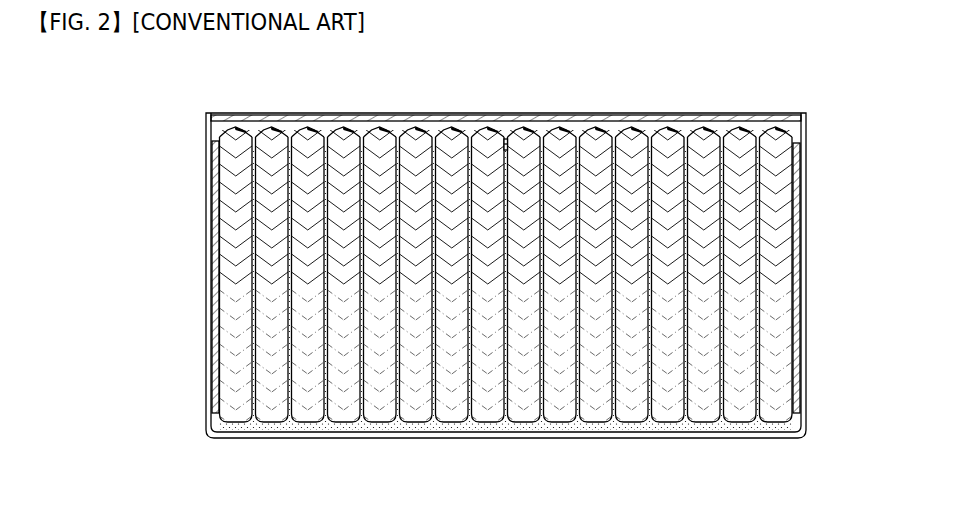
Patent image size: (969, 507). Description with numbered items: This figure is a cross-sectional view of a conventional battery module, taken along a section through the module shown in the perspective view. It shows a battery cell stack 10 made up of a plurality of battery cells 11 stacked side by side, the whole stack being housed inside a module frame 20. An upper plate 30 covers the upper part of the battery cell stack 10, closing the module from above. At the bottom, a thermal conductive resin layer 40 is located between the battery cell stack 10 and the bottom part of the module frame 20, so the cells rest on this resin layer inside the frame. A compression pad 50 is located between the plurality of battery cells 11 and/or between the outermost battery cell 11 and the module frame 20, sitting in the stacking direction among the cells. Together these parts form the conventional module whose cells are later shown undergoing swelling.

The battery cell stack 10 is at (235, 280).
The battery cell 11 is at (237, 331).
The module frame 20 is at (212, 168).
The upper plate 30 is at (245, 113).
The thermal conductive resin layer 40 is at (505, 432).
The compression pad 50 is at (505, 150).